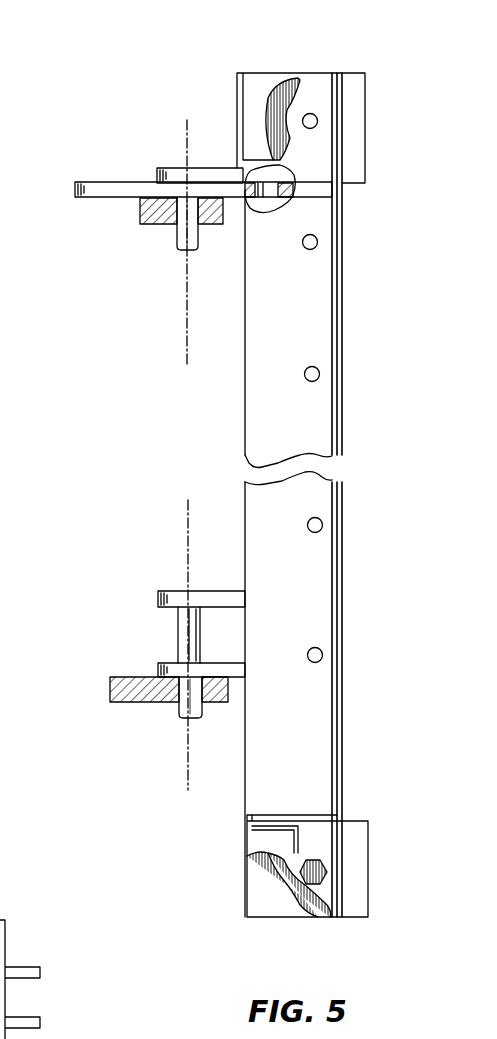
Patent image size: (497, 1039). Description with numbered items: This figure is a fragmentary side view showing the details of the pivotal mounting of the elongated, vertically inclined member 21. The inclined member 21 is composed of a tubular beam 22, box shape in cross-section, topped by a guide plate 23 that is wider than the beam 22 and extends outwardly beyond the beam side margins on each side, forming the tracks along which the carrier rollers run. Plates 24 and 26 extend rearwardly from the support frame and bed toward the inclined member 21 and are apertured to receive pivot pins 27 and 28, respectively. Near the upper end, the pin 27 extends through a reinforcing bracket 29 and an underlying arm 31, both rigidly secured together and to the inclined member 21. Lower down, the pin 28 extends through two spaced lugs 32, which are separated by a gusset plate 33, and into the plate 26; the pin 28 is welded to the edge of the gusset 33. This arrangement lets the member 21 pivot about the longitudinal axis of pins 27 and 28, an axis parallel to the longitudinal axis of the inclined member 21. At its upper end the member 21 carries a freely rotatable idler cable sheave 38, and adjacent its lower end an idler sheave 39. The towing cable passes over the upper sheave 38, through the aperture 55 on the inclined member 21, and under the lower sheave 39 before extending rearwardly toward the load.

The inclined member 21 is at (314, 468).
The tubular beam 22 is at (262, 400).
The guide plate 23 is at (342, 420).
The plate 24 is at (160, 225).
The plate 26 is at (138, 697).
The pivot pin 27 is at (180, 232).
The pivot pin 28 is at (185, 707).
The reinforcing bracket 29 is at (178, 175).
The arm 31 is at (103, 190).
The lugs 32 is at (208, 595).
The gusset plate 33 is at (215, 633).
The idler cable sheave 38 is at (283, 115).
The idler sheave 39 is at (288, 885).
The aperture 55 is at (262, 200).